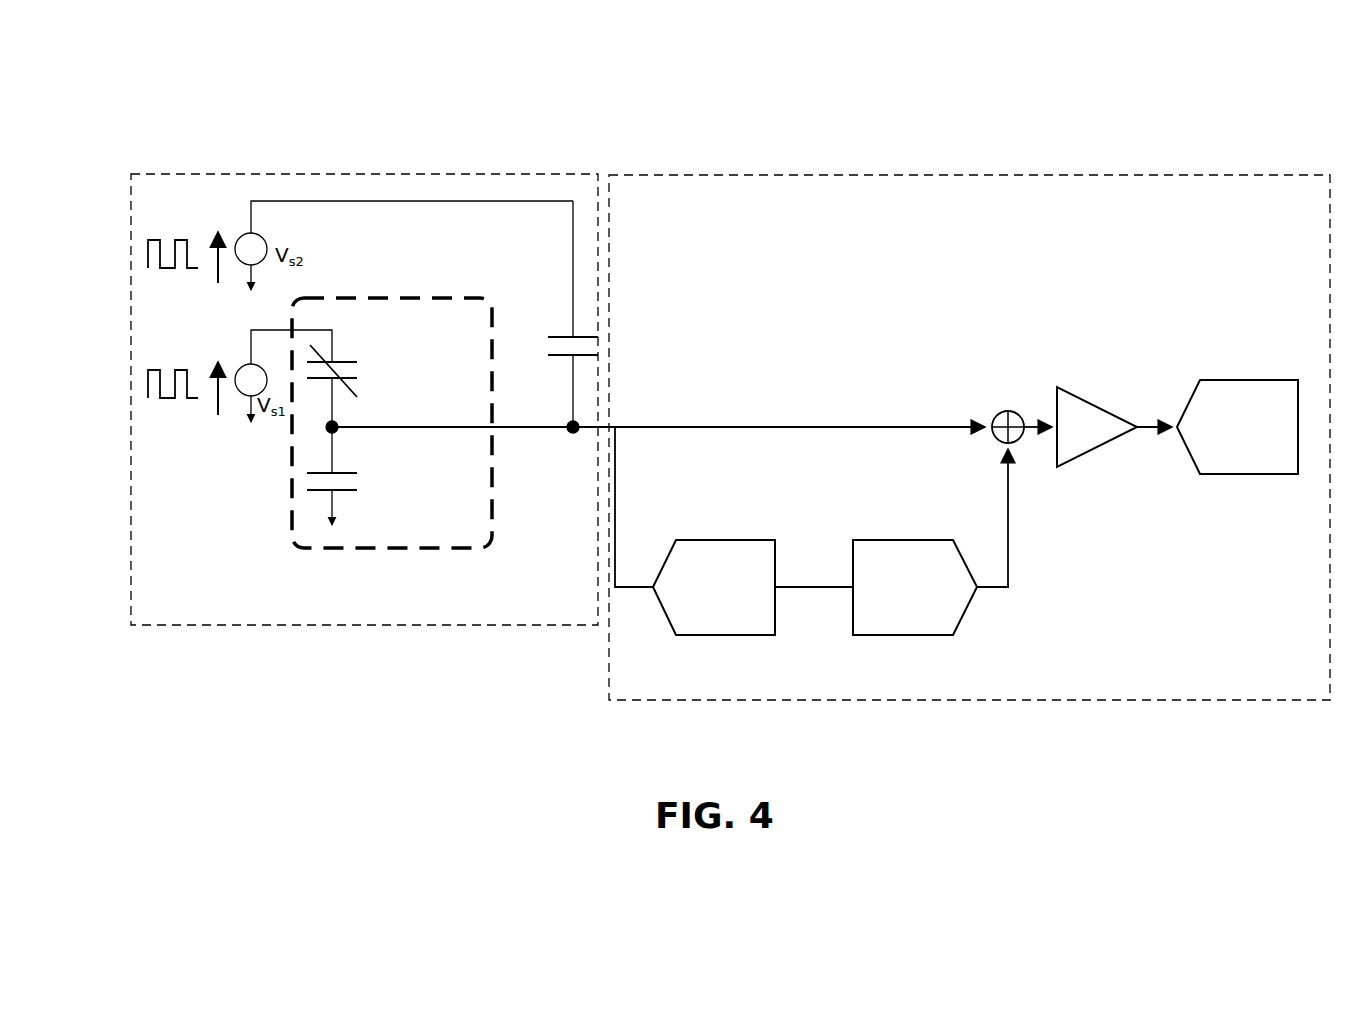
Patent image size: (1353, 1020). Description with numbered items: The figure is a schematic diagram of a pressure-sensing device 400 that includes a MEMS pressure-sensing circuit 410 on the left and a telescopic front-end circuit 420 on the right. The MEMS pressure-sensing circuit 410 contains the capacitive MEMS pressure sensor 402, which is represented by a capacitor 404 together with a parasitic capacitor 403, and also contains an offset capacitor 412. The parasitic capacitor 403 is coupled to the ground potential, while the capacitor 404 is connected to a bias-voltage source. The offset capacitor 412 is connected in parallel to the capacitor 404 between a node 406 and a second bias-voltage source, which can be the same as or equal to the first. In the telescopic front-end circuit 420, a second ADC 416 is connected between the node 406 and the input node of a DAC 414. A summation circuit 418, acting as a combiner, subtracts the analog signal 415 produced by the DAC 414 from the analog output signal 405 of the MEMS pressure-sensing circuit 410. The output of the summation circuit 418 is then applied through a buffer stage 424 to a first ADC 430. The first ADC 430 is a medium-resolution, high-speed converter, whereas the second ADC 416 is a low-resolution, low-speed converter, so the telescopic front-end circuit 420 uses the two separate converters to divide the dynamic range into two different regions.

The pressure-sensing device 400 is at (150, 98).
The capacitive MEMS pressure sensor 402 is at (497, 545).
The parasitic capacitor 403 is at (379, 473).
The capacitor 404 is at (357, 383).
The analog output signal 405 is at (658, 414).
The node 406 is at (572, 445).
The MEMS pressure-sensing circuit 410 is at (500, 171).
The offset capacitor 412 is at (560, 314).
The DAC 414 is at (895, 530).
The analog signal 415 is at (1013, 518).
The second ADC 416 is at (725, 530).
The summation circuit 418 is at (1012, 405).
The telescopic front-end circuit 420 is at (985, 172).
The buffer stage 424 is at (1093, 396).
The first ADC 430 is at (1248, 373).